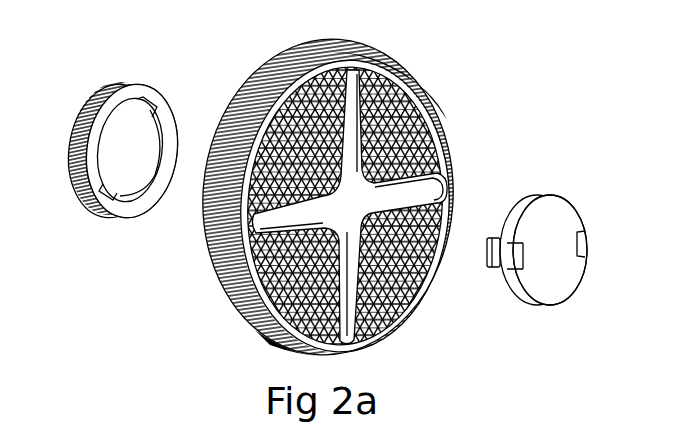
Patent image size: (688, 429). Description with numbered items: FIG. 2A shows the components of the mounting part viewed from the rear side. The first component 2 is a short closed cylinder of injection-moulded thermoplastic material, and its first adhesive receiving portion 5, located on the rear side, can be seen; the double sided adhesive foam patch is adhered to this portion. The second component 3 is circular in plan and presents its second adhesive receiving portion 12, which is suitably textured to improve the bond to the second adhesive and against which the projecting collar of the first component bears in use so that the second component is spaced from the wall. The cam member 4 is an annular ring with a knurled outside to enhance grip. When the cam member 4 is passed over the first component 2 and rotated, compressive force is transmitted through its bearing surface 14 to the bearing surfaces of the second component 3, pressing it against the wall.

The first component 2 is at (572, 189).
The second component 3 is at (438, 75).
The cam member 4 is at (90, 228).
The first adhesive receiving portion 5 is at (561, 270).
The second adhesive receiving portion 12 is at (407, 282).
The bearing surface of the cam member 14 is at (137, 204).